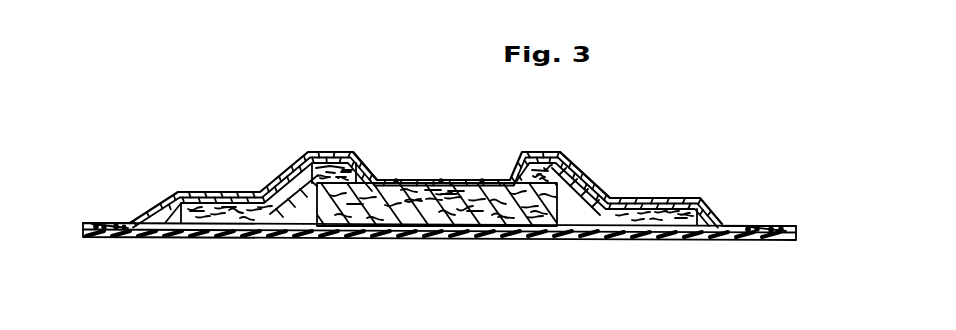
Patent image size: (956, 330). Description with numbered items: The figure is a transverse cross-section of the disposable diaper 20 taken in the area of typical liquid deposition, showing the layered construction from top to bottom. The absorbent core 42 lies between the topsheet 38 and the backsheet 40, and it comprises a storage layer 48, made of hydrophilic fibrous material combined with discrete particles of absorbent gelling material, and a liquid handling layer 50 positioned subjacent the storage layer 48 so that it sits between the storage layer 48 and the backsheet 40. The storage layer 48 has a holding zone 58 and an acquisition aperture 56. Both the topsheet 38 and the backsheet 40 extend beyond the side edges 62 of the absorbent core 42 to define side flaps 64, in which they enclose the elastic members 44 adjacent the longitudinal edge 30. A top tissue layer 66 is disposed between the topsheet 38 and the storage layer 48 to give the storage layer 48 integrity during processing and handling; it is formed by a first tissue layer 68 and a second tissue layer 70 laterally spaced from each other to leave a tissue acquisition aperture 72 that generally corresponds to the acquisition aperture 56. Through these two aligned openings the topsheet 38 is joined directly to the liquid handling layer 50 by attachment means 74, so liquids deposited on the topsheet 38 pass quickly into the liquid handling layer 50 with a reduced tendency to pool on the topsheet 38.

The absorbent article 20 is at (181, 144).
The longitudinal edge 30 is at (82, 226).
The topsheet 38 is at (333, 151).
The backsheet 40 is at (627, 238).
The absorbent core 42 is at (565, 189).
The elastic members 44 is at (114, 230).
The storage layer 48 is at (305, 152).
The liquid handling layer 50 is at (421, 238).
The acquisition aperture 56 is at (372, 164).
The holding zone 58 is at (222, 210).
The side edges 62 is at (164, 236).
The side flaps 64 is at (119, 206).
The top tissue layer 66 is at (284, 180).
The first tissue layer 68 is at (198, 193).
The second tissue layer 70 is at (633, 198).
The tissue acquisition aperture 72 is at (361, 164).
The attachment means 74 is at (482, 180).